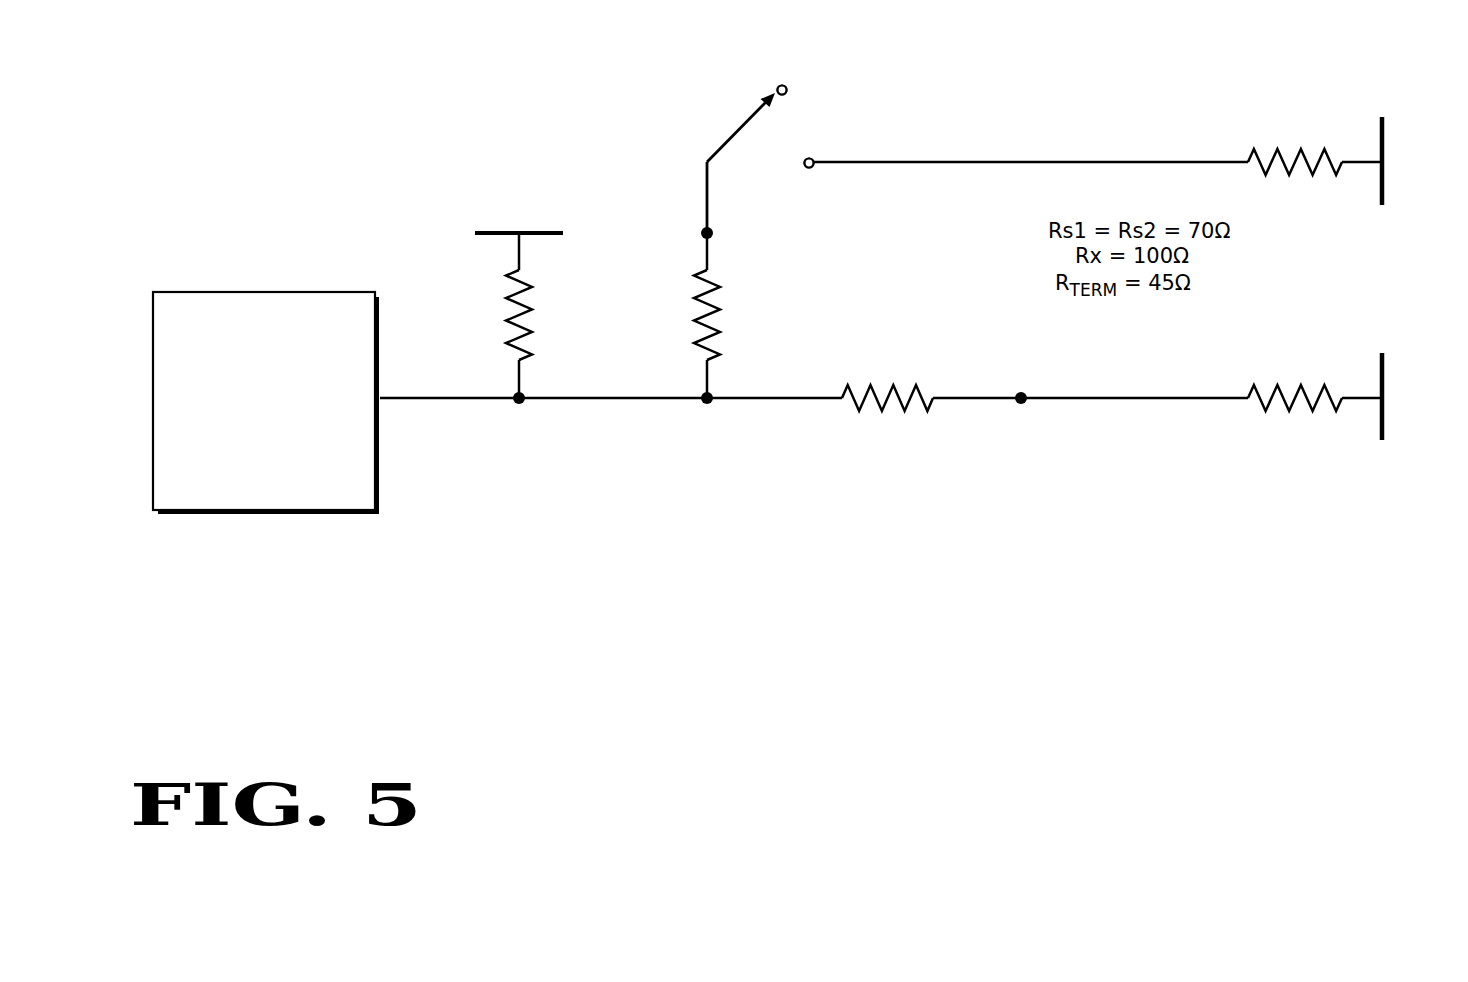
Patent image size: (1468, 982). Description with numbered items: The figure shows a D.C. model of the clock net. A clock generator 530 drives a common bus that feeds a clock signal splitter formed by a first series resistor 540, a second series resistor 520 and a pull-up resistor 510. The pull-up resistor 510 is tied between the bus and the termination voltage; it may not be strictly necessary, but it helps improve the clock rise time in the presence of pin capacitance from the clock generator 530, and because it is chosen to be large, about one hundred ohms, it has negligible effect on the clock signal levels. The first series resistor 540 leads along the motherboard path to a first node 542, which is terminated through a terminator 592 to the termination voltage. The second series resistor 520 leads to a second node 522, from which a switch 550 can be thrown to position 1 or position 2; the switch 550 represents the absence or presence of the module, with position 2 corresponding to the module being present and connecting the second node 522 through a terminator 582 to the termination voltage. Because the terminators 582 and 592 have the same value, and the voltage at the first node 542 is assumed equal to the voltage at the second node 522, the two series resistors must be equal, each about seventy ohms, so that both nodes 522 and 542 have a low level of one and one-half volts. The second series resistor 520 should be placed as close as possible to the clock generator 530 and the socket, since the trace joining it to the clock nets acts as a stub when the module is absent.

The pull-up resistor Rx 510 is at (576, 327).
The resistor Rs2 520 is at (764, 327).
The node 522 is at (704, 228).
The clock generator 530 is at (367, 502).
The resistor Rs1 540 is at (911, 436).
The node 542 is at (1018, 394).
The switch 550 is at (737, 128).
The terminator 582 is at (1314, 199).
The terminator 592 is at (1314, 436).
The switch position 1 is at (792, 81).
The switch position 2 is at (816, 150).